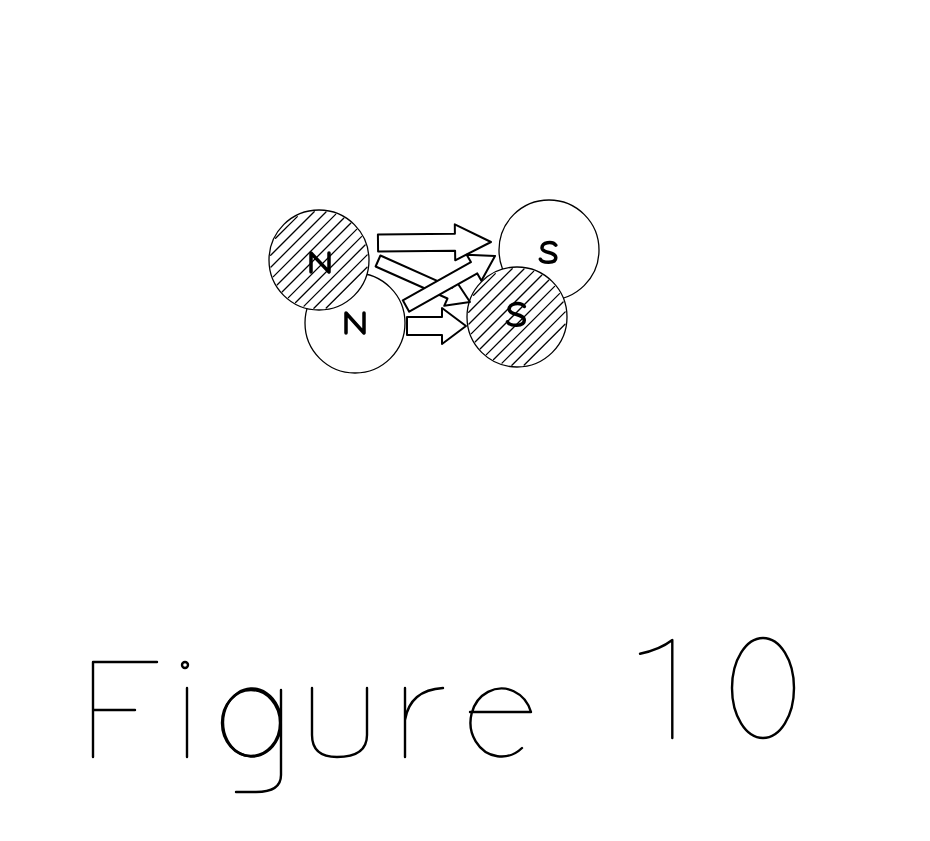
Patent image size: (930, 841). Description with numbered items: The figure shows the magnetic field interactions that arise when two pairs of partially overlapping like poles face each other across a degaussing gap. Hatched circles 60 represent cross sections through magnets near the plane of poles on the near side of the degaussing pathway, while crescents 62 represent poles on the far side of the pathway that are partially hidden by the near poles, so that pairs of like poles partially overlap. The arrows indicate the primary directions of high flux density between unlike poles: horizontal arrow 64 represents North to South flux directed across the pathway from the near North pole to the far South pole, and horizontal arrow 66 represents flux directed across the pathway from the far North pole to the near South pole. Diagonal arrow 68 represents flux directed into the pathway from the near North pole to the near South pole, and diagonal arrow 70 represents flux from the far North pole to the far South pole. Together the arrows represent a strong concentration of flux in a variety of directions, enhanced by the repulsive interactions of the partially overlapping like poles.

The hatched circles 60 is at (268, 255).
The crescents 62 is at (788, 172).
The horizontal arrow 64 is at (423, 243).
The horizontal arrow 66 is at (422, 337).
The diagonal arrow 68 is at (433, 345).
The diagonal arrow 70 is at (497, 256).